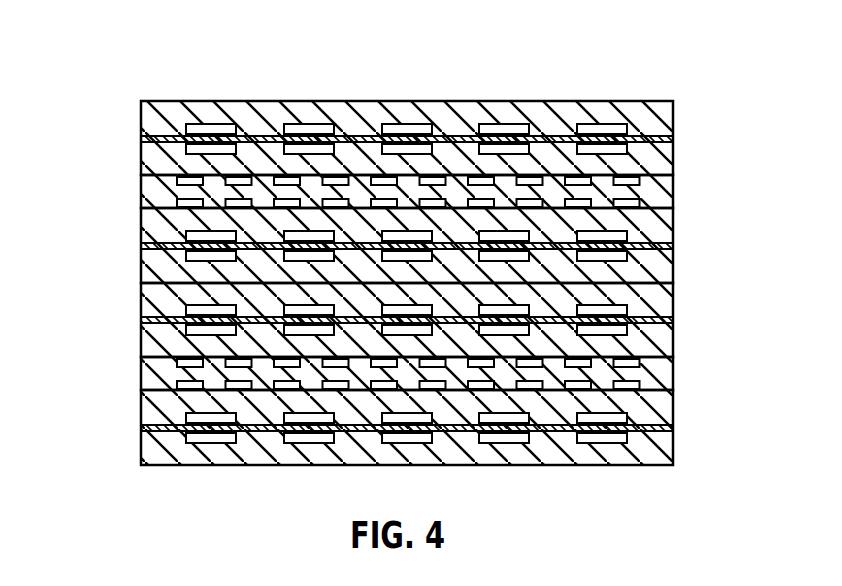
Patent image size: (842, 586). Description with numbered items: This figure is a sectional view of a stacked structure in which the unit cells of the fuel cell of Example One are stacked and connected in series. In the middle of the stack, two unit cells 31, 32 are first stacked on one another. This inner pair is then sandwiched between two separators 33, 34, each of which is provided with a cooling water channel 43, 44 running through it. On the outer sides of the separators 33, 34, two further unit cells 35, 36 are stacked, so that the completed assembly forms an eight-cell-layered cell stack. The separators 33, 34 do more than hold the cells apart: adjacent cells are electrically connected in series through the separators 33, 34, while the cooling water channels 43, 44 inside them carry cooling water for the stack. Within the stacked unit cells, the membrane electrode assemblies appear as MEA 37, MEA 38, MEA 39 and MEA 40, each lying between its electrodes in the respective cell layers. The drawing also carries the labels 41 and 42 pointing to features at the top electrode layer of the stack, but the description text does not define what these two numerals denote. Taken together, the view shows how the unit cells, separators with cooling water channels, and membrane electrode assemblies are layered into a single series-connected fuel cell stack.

The unit cell 31 is at (684, 202).
The unit cell 32 is at (684, 285).
The separator 33 is at (674, 362).
The separator 34 is at (674, 180).
The unit cell 35 is at (684, 97).
The unit cell 36 is at (684, 385).
The MEA 37 is at (145, 137).
The MEA 38 is at (145, 245).
The MEA 39 is at (145, 320).
The MEA 40 is at (145, 428).
The upper electrode pad 41 is at (488, 126).
The lower electrode pad 42 is at (516, 140).
The cooling water channel 43 is at (150, 186).
The cooling water channel 44 is at (150, 203).